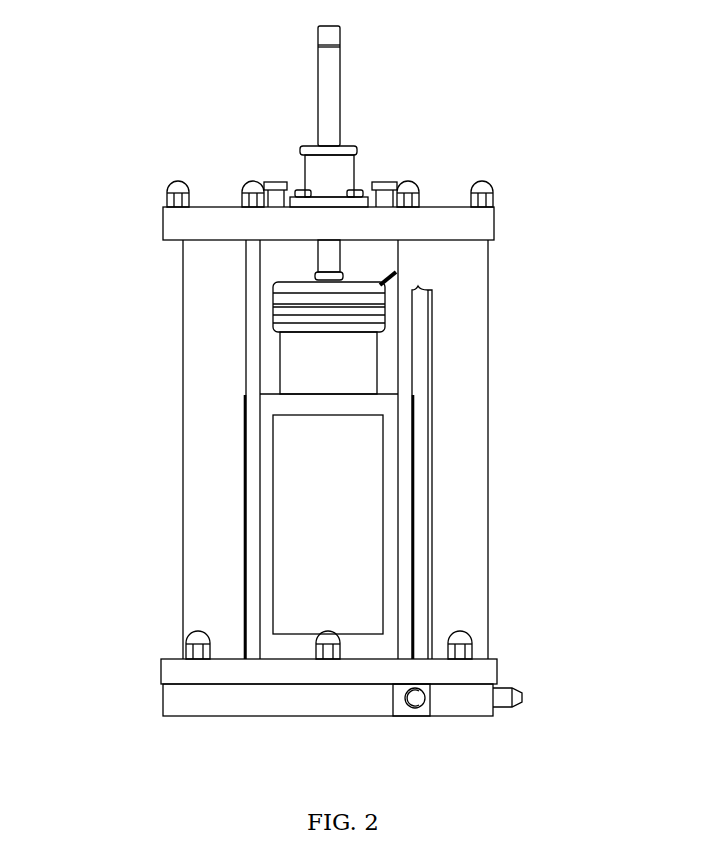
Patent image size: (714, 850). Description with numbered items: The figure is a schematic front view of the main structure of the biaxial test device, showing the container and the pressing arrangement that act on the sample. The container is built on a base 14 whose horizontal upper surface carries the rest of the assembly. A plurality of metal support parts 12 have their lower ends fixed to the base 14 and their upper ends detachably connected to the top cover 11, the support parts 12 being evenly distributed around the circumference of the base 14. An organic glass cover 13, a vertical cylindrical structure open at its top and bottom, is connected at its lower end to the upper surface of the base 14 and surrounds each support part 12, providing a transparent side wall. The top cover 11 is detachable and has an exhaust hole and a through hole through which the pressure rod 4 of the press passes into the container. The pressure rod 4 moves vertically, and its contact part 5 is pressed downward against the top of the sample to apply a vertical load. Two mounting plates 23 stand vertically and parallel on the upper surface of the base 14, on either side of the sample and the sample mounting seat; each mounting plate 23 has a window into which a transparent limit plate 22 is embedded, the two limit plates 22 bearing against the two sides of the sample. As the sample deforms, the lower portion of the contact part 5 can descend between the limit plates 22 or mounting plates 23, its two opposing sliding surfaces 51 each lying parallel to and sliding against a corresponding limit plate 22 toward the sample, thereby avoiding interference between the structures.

The pressure rod 4 is at (325, 263).
The contact part 5 is at (298, 310).
The sliding surface 51 is at (310, 363).
The top cover 11 is at (455, 229).
The support part 12 is at (403, 352).
The organic glass cover 13 is at (467, 288).
The base 14 is at (467, 675).
The limit plate 22 is at (360, 489).
The mounting plate 23 is at (390, 570).